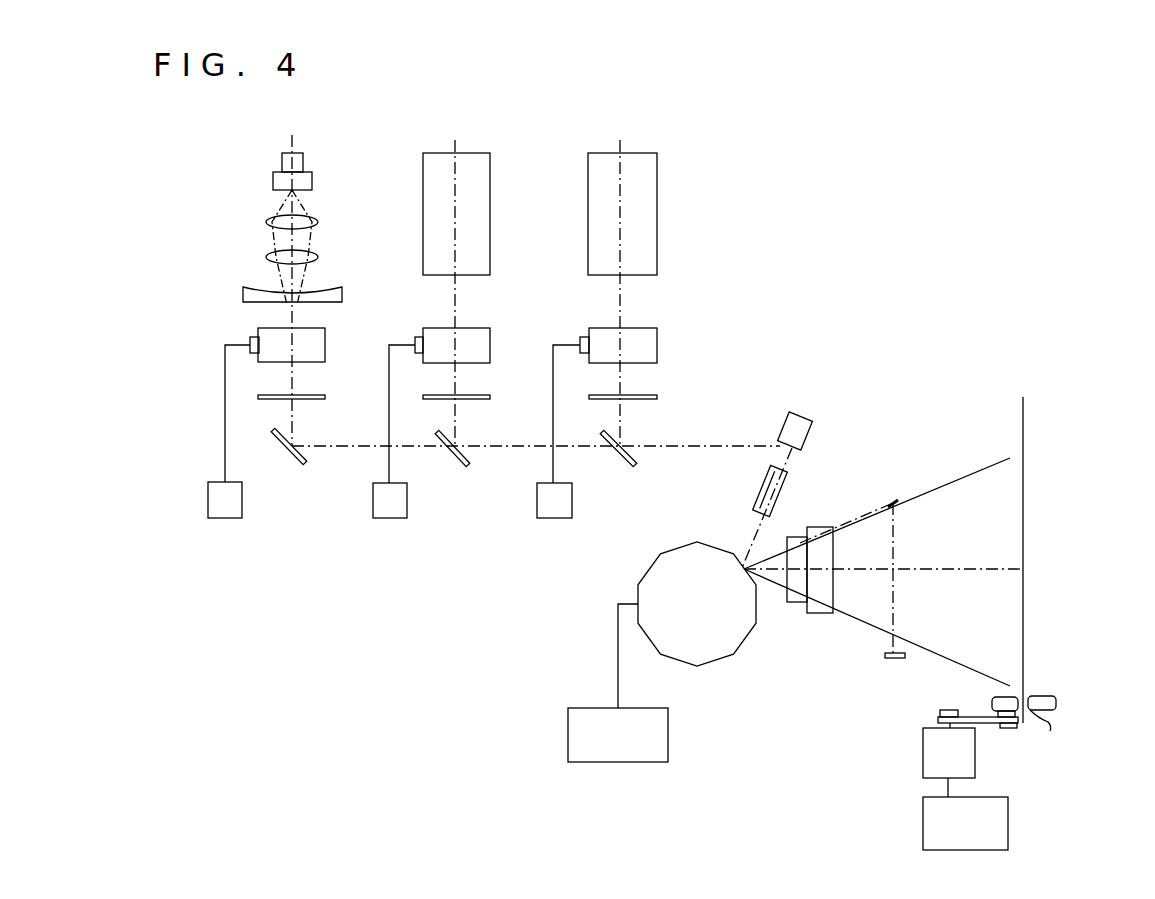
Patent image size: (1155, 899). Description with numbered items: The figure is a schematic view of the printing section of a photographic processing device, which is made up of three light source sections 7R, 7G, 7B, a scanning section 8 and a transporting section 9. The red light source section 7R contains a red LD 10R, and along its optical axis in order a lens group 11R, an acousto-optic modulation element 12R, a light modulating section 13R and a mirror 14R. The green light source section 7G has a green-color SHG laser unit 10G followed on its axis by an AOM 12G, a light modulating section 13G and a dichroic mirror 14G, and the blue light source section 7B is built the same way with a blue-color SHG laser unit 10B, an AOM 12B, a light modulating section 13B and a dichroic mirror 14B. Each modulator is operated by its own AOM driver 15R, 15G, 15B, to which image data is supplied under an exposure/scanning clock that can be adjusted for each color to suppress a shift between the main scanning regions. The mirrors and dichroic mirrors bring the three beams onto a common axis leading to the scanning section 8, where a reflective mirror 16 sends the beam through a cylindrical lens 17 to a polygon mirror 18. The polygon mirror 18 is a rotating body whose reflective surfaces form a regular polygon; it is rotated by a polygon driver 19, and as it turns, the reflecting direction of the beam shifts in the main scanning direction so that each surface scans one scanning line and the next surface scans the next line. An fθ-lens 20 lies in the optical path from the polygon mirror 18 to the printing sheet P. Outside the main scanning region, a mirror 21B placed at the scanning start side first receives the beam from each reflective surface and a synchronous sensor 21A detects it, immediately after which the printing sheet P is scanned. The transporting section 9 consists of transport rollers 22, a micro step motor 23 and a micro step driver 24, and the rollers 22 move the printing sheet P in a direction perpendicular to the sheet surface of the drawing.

The light source section 7R is at (317, 147).
The light source section 7G is at (498, 147).
The light source section 7B is at (666, 148).
The red LD 10R is at (282, 158).
The green-color SHG laser unit 10G is at (428, 180).
The blue-color SHG laser unit 10B is at (593, 182).
The lens group 11R is at (238, 212).
The acousto-optic modulation element 12R is at (262, 334).
The AOM 12G is at (432, 330).
The AOM 12B is at (597, 330).
The light modulating section 13R is at (284, 397).
The light modulating section 13G is at (447, 397).
The light modulating section 13B is at (610, 397).
The mirror 14R is at (292, 452).
The dichroic mirror 14G is at (458, 452).
The dichroic mirror 14B is at (621, 452).
The AOM driver 15R is at (225, 520).
The AOM driver 15G is at (390, 520).
The AOM driver 15B is at (555, 520).
The scanning section 8 is at (815, 375).
The reflective mirror 16 is at (807, 438).
The cylindrical lens 17 is at (780, 493).
The polygon mirror 18 is at (663, 567).
The polygon driver 19 is at (593, 707).
The fθ-lens 20 is at (815, 611).
The synchronous sensor 21A is at (887, 660).
The mirror 21B is at (893, 500).
The printing sheet P is at (1025, 440).
The transport rollers 22 is at (1034, 722).
The micro step motor 23 is at (925, 760).
The micro step driver 24 is at (927, 828).
The transporting section 9 is at (1078, 814).